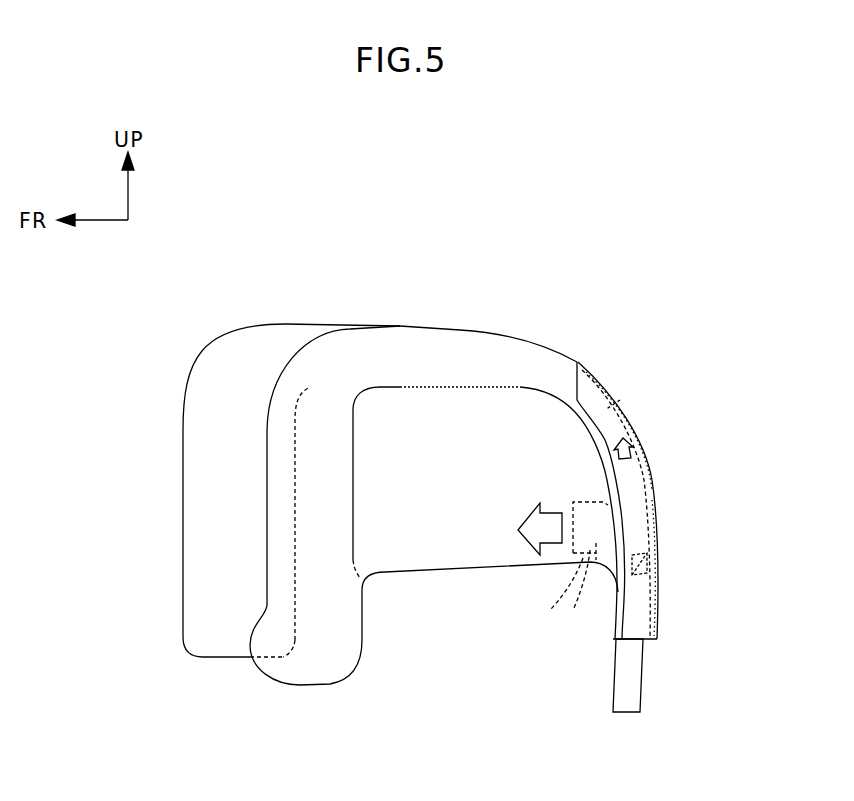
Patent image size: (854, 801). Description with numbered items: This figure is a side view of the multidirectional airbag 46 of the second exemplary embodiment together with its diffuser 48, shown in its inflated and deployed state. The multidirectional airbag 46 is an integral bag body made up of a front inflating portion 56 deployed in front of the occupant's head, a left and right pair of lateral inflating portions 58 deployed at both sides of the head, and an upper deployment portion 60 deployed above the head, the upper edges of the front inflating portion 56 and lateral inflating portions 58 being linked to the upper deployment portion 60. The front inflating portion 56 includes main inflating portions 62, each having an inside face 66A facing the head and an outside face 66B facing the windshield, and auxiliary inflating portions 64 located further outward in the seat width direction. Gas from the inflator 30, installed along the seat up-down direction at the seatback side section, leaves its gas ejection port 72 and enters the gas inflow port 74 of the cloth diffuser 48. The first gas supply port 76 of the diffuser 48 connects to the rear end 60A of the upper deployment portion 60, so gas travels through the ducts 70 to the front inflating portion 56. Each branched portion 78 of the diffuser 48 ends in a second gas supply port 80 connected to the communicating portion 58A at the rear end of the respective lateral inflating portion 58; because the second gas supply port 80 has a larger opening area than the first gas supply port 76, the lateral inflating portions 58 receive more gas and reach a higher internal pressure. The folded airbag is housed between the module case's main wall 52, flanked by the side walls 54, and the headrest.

The inflator 30 is at (635, 677).
The multidirectional airbag 46 is at (297, 302).
The diffuser 48 is at (648, 508).
The main wall 52 is at (598, 380).
The side walls 54 is at (608, 407).
The front inflating portion 56 is at (203, 423).
The lateral inflating portion 58 is at (455, 515).
The communicating portion 58A is at (593, 500).
The upper deployment portion 60 is at (436, 326).
The rear end 60A is at (655, 477).
The main inflating portion 62 is at (200, 583).
The auxiliary inflating portion 64 is at (268, 678).
The inside face 66A is at (297, 495).
The outside face 66B is at (182, 505).
The duct 70 is at (545, 356).
The gas ejection port 72 is at (660, 575).
The gas inflow port 74 is at (633, 642).
The first gas supply port 76 is at (640, 436).
The branched portion 78 is at (592, 556).
The second gas supply port 80 is at (559, 550).